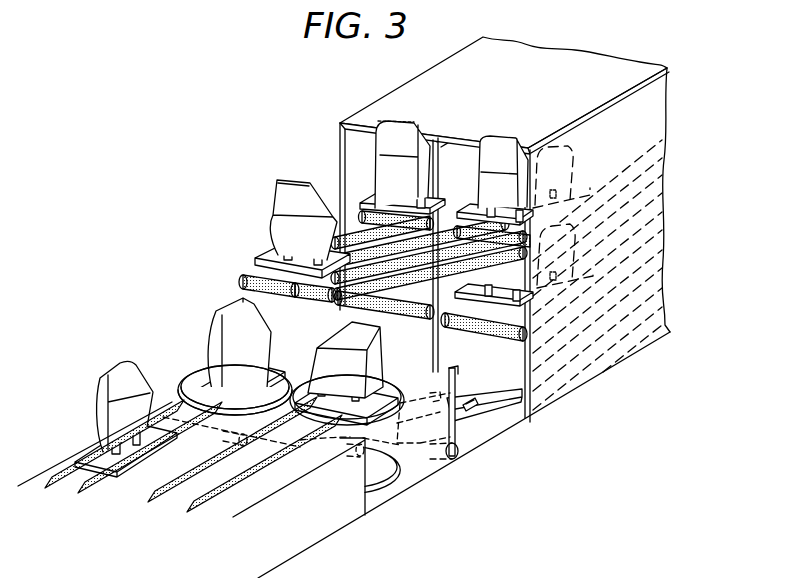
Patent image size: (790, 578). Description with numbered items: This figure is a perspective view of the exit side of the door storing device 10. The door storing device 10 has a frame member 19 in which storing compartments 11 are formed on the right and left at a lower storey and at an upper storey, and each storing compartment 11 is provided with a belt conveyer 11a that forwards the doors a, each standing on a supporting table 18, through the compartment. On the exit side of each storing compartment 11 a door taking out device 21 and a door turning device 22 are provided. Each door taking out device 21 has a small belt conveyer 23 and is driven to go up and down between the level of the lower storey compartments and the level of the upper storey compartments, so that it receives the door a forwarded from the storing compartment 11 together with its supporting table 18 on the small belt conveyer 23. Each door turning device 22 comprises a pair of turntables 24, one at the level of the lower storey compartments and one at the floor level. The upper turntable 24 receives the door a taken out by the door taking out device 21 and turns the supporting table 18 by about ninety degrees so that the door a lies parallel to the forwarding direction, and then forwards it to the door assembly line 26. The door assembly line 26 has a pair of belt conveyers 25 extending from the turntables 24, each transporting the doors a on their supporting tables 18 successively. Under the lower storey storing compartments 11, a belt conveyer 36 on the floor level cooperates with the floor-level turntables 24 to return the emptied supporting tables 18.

The door storing device 10 is at (362, 100).
The storing compartment 11 is at (457, 172).
The belt conveyer 11a is at (645, 205).
The supporting table 18 is at (265, 258).
The frame member 19 is at (643, 85).
The door taking out device 21 is at (238, 267).
The door turning device 22 is at (190, 362).
The small belt conveyer 23 is at (310, 338).
The turntable 24 is at (378, 477).
The belt conveyer 25 is at (147, 499).
The door assembly line 26 is at (53, 455).
The belt conveyer 36 is at (473, 428).
The door a is at (276, 210).